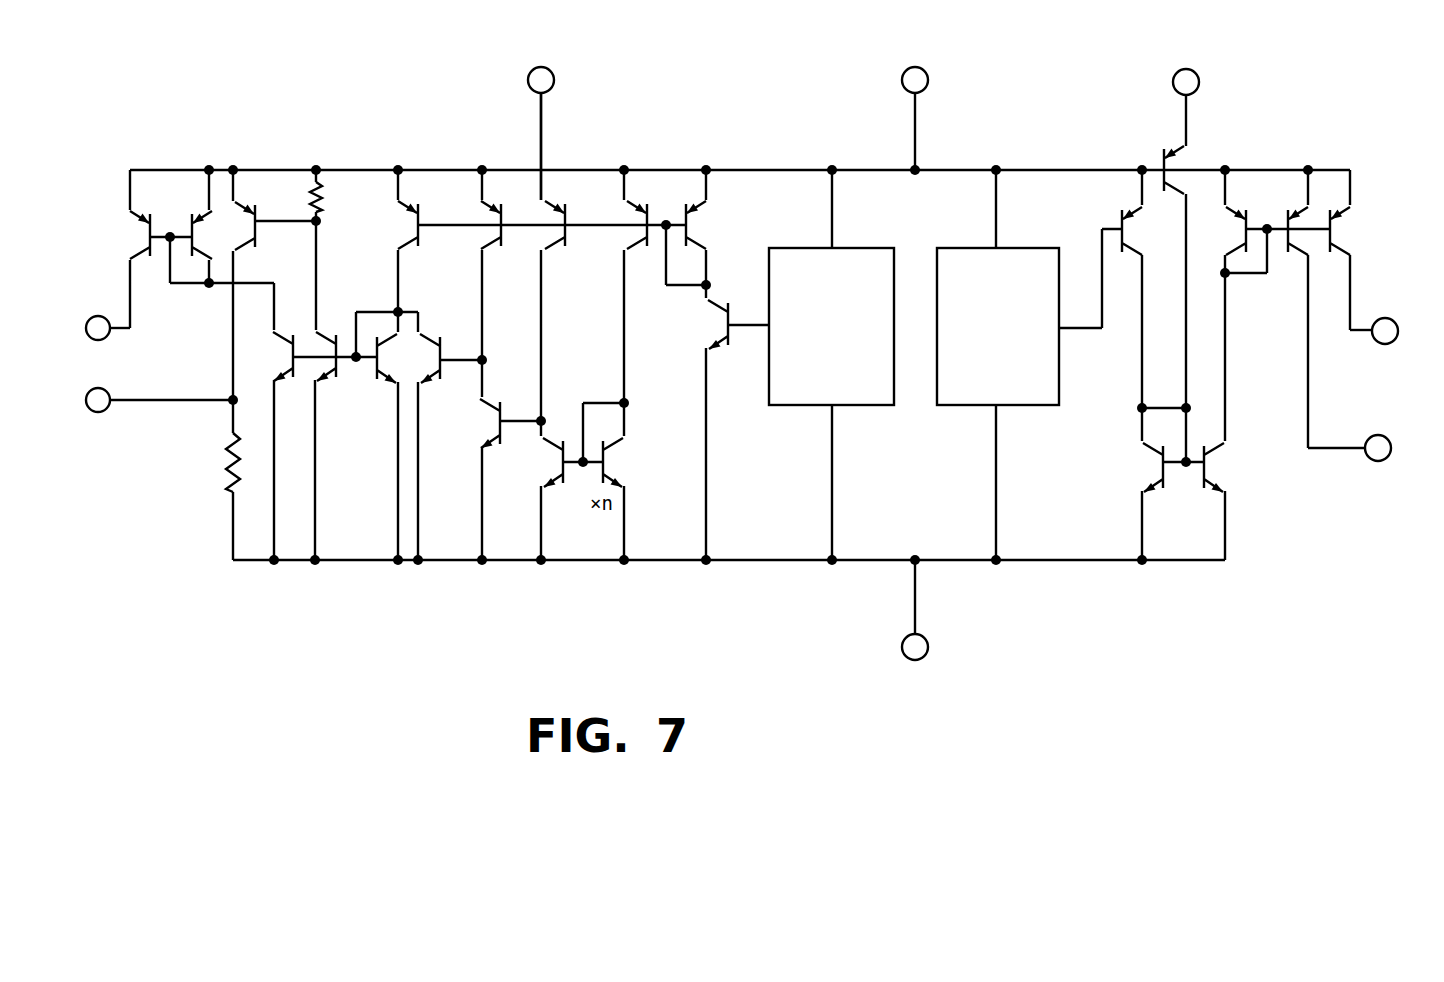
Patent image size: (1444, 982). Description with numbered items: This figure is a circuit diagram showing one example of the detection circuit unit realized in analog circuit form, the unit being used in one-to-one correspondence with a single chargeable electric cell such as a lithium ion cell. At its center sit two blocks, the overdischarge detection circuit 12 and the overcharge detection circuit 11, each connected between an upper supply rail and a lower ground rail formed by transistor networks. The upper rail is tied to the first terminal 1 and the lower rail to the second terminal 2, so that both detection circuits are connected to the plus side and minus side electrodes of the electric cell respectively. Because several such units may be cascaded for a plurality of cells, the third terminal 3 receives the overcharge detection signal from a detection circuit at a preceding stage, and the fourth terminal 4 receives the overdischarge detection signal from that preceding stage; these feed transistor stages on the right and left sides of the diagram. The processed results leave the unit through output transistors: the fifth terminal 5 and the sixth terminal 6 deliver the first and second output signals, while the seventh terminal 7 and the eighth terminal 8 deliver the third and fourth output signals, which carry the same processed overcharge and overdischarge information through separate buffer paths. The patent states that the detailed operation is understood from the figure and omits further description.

The overcharge detection circuit 11 is at (1040, 406).
The overdischarge detection circuit 12 is at (781, 406).
The first terminal 1 is at (957, 102).
The second terminal 2 is at (953, 626).
The third terminal 3 is at (1226, 90).
The fourth terminal 4 is at (580, 117).
The fifth terminal 5 is at (1390, 359).
The sixth terminal 6 is at (138, 349).
The seventh terminal 7 is at (1366, 476).
The eighth terminal 8 is at (159, 424).